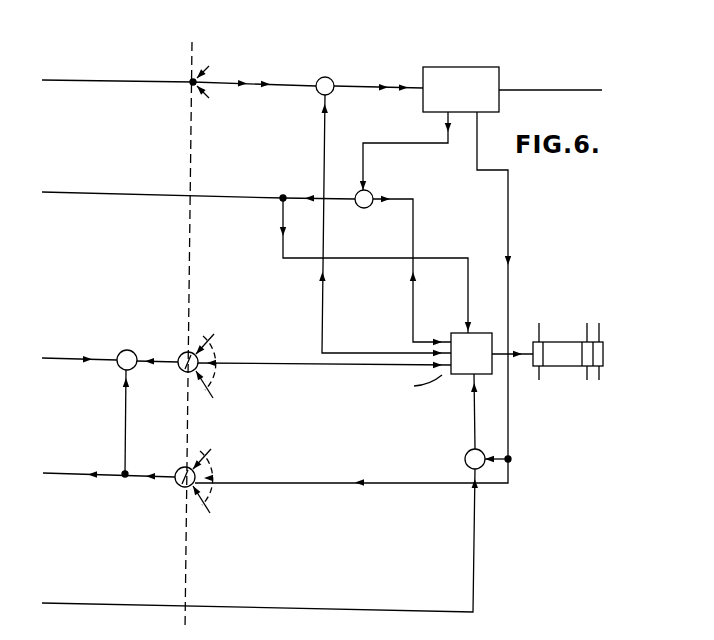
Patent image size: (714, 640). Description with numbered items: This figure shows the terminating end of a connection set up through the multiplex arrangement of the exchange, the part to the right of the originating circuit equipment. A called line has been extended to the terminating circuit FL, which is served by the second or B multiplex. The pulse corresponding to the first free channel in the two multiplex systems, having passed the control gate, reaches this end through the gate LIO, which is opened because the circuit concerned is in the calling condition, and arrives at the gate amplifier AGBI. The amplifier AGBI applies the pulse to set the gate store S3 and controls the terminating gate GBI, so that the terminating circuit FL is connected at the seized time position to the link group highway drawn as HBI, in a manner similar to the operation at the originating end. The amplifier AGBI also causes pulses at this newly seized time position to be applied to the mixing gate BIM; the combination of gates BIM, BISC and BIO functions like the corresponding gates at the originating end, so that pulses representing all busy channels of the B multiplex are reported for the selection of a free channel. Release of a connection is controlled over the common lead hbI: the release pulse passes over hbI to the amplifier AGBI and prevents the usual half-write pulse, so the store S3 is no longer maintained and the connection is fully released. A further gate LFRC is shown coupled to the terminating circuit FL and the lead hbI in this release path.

The HBI signal line HBI is at (179, 80).
The common release lead hbI is at (198, 188).
The terminating gate GBI is at (340, 76).
The terminating circuit FL is at (467, 66).
The LFRC gate circuit LFRC is at (388, 267).
The gate amplifier AGBI is at (470, 347).
The gate store S3 is at (576, 342).
The gate BISC is at (110, 401).
The mixing gate BIM is at (314, 338).
The gate BIO is at (111, 481).
The gate LIO is at (263, 493).